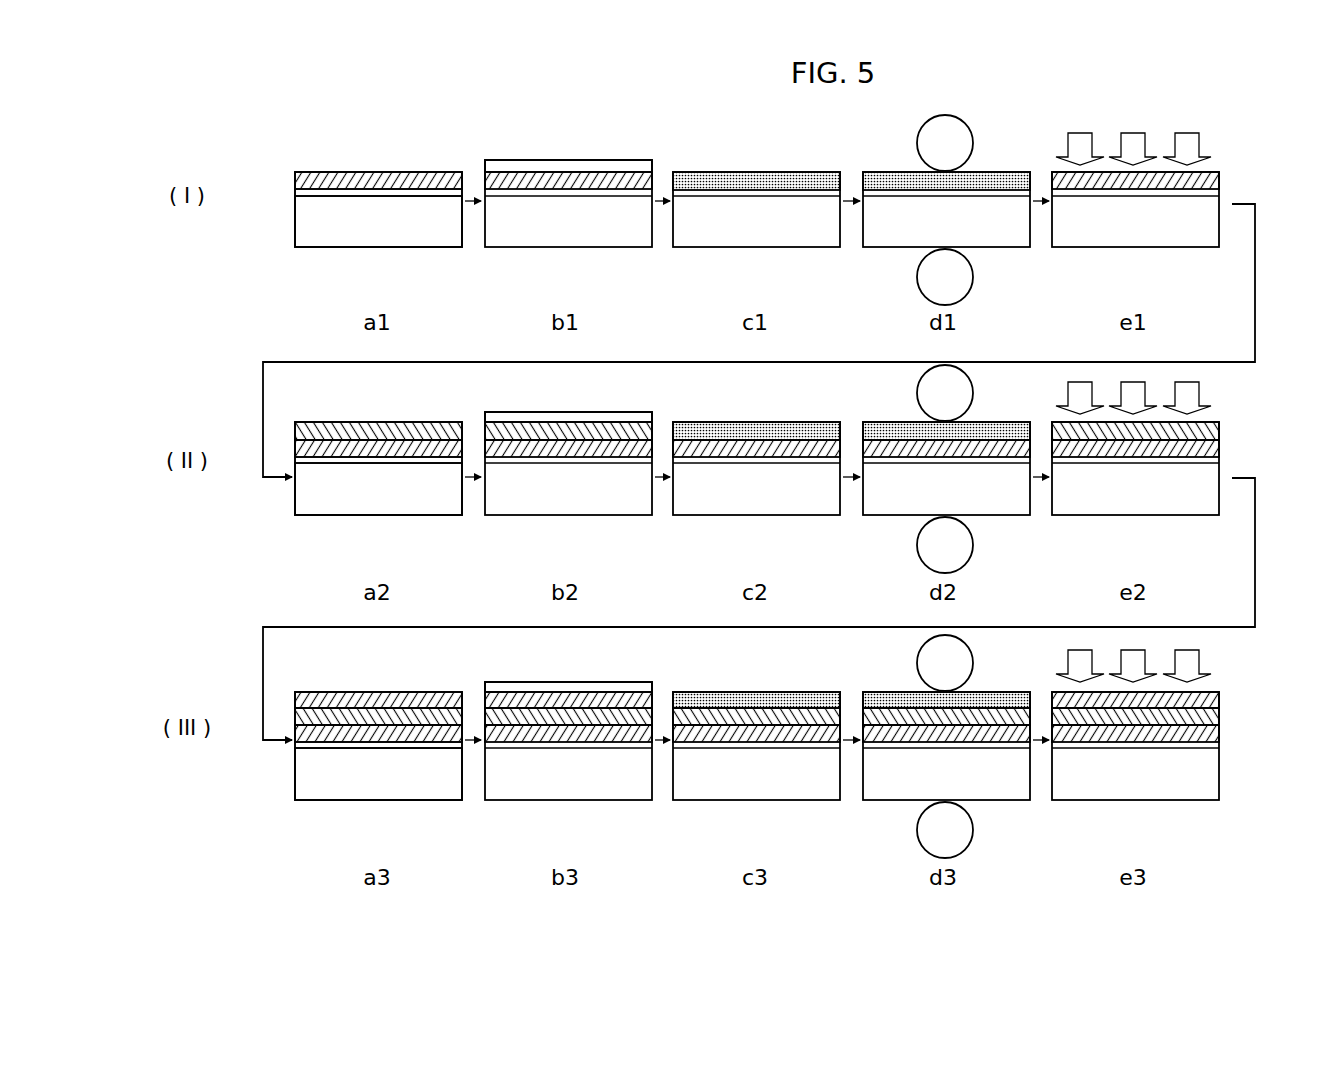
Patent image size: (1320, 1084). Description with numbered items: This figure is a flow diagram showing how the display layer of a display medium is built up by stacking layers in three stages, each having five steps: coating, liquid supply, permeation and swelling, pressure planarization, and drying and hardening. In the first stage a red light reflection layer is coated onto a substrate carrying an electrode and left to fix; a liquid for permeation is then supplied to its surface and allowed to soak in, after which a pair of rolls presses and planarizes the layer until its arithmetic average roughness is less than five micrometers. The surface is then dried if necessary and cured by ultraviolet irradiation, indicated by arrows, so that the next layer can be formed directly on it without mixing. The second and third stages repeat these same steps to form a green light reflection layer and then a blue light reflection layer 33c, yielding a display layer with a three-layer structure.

The blue light reflection layer 33c is at (315, 698).